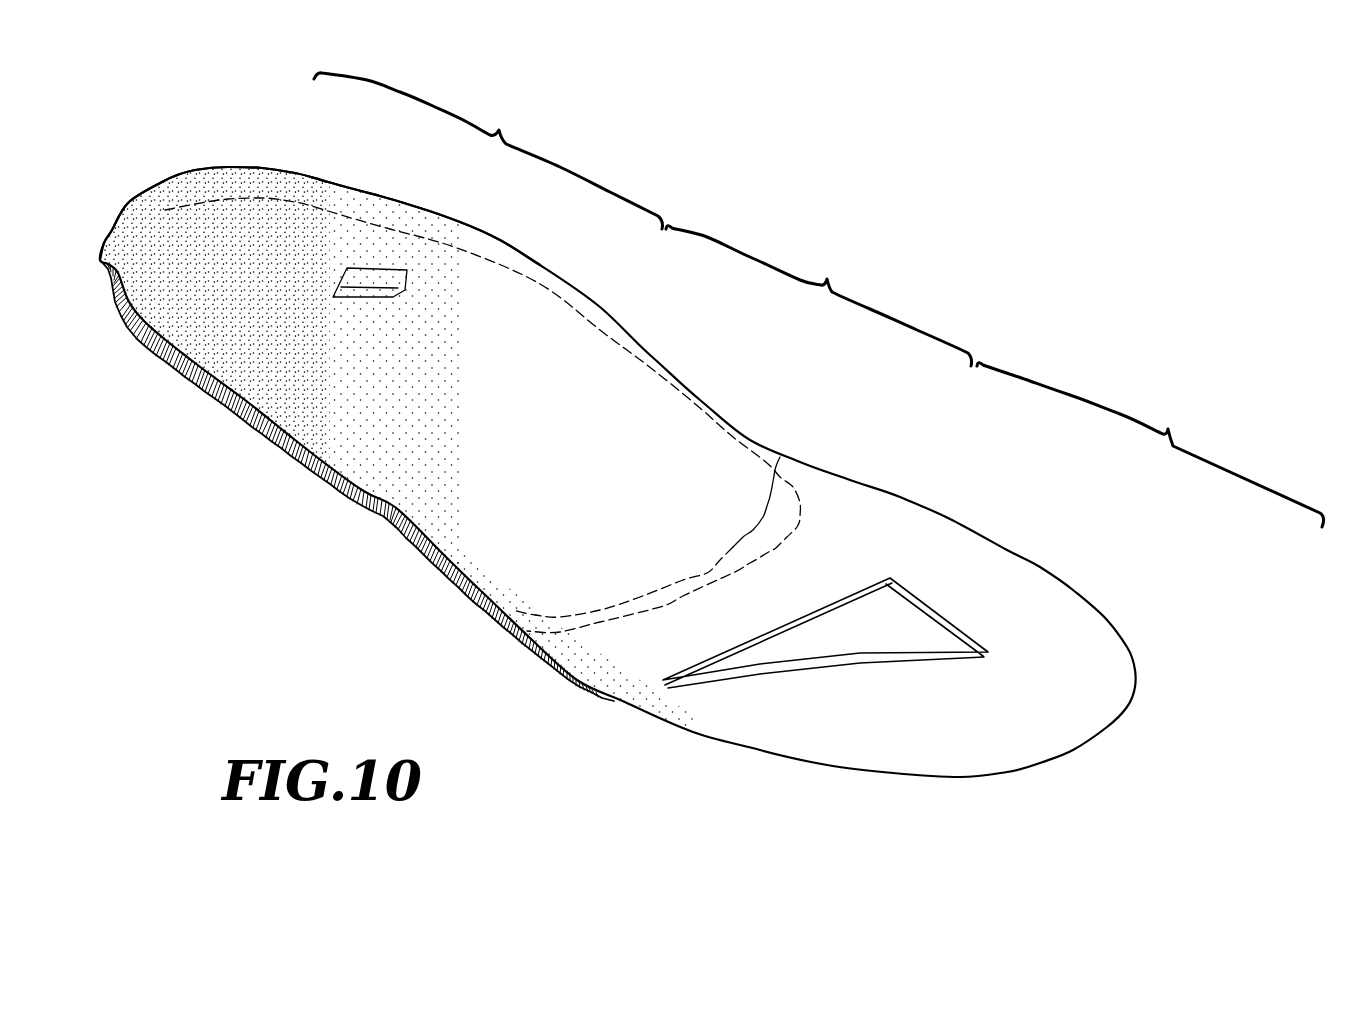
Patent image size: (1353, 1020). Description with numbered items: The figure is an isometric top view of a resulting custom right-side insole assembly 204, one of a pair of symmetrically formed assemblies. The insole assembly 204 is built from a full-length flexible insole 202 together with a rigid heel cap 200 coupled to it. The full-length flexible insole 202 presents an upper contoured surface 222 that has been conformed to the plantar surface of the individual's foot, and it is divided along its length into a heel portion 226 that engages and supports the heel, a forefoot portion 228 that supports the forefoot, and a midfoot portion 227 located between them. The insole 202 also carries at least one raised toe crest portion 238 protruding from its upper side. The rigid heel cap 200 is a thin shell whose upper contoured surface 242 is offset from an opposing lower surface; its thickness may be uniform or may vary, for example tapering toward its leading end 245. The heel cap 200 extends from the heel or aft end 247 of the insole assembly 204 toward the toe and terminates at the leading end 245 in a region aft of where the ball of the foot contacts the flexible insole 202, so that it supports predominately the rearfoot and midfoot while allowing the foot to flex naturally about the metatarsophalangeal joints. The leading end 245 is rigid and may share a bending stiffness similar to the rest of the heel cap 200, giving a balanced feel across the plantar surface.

The rigid heel cap 200 is at (346, 267).
The full-length flexible insole 202 is at (373, 240).
The insole assembly 204 is at (1005, 334).
The upper contoured surface 222 is at (545, 322).
The heel portion 226 is at (488, 151).
The midfoot portion 227 is at (819, 296).
The forefoot portion 228 is at (1150, 445).
The raised toe crest portion 238 is at (917, 627).
The upper contoured surface 242 is at (390, 290).
The leading end 245 is at (780, 457).
The aft end 247 is at (140, 347).